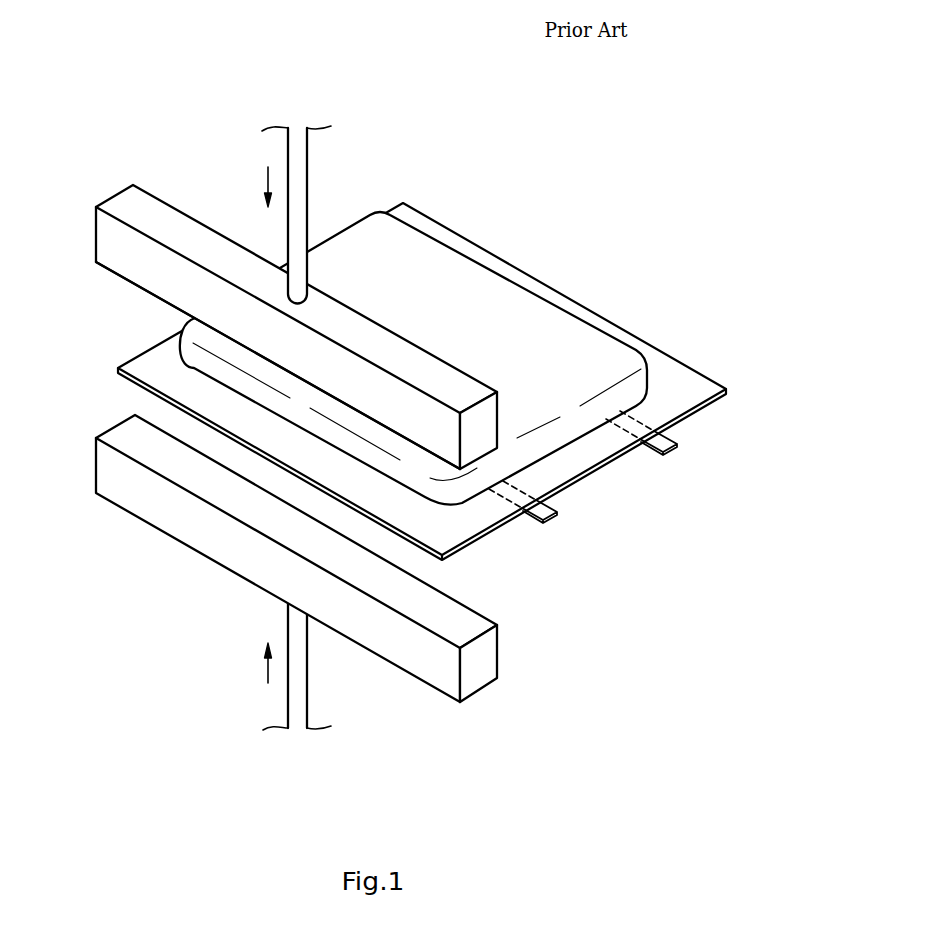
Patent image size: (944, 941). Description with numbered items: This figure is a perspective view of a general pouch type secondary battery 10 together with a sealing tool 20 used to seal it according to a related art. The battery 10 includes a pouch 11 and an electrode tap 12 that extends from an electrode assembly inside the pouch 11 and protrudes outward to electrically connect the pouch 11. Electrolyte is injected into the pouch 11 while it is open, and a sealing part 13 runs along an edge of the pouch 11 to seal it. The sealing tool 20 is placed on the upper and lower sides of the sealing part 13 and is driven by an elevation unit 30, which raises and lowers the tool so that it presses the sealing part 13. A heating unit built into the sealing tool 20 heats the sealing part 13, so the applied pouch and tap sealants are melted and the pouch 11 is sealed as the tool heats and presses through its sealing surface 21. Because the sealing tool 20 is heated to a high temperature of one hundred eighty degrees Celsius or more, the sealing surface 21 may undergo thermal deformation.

The pouch type secondary battery 10 is at (437, 379).
The pouch 11 is at (573, 333).
The electrode tap 12 is at (665, 442).
The sealing part 13 is at (393, 512).
The sealing tool 20 is at (270, 288).
The sealing surface 21 is at (113, 272).
The elevation unit 30 is at (298, 168).